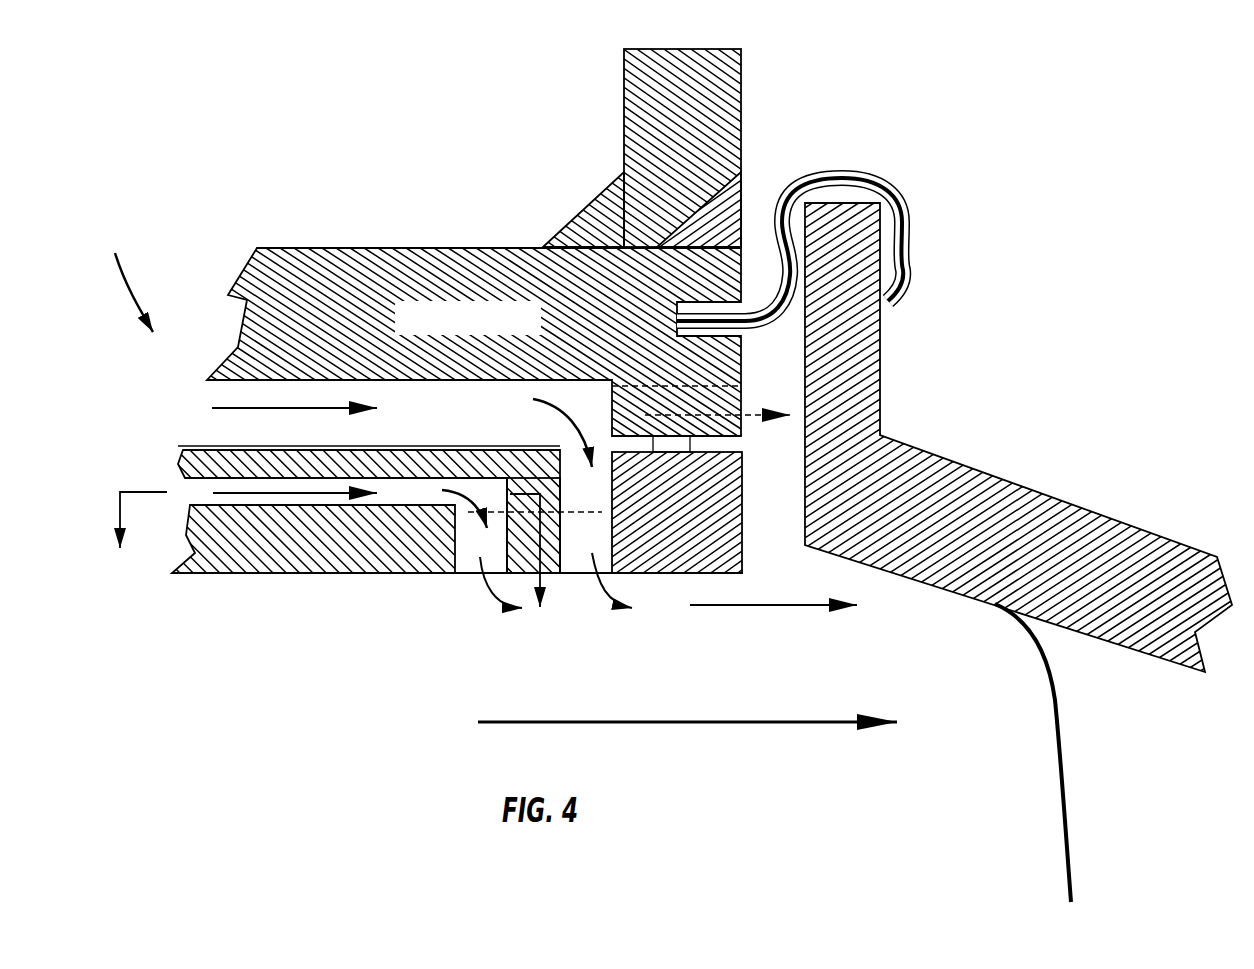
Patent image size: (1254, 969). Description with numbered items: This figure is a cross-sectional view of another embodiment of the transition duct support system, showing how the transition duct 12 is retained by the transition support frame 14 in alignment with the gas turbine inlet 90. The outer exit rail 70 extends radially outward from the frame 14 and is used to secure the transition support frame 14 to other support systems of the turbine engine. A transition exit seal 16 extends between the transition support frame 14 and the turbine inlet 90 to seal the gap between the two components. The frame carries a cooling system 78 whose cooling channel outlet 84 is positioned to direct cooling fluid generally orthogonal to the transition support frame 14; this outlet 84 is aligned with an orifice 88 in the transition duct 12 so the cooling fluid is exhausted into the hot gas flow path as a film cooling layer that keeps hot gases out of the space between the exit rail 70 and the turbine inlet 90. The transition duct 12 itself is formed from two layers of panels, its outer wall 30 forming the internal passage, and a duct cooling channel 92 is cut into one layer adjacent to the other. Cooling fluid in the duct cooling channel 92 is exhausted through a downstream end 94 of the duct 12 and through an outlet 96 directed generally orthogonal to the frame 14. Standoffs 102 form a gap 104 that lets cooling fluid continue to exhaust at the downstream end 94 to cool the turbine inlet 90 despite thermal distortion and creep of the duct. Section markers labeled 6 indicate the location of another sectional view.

The transition duct 12 is at (313, 570).
The transition support frame 14 is at (390, 247).
The transition exit seal 16 is at (853, 168).
The outer wall 30 is at (262, 570).
The outer exit rail 70 is at (624, 116).
The cooling system 78 is at (267, 405).
The outlet 84 is at (587, 575).
The orifice 88 is at (582, 540).
The gas turbine inlet 90 is at (978, 467).
The duct cooling channel 92 is at (200, 493).
The downstream end 94 is at (743, 510).
The outlet 96 is at (473, 557).
The standoff 102 is at (680, 444).
The gap 104 is at (742, 448).
The section line 6- 6 is at (330, 566).